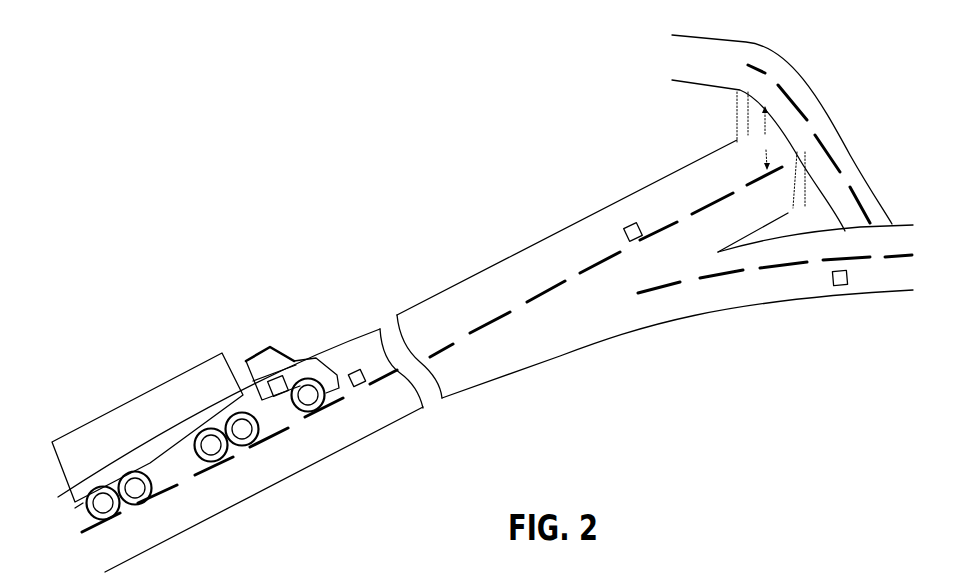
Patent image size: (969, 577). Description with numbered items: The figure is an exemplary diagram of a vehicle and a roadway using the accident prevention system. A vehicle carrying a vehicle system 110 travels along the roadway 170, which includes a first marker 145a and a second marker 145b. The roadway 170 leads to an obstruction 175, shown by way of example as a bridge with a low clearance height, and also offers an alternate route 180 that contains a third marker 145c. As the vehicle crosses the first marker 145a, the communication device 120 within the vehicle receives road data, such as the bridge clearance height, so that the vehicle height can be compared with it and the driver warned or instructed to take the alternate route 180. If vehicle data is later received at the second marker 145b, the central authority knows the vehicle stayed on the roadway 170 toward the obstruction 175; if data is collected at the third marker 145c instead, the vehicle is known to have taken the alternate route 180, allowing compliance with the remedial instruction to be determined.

The vehicle system 110 is at (273, 379).
The communication device 120 is at (303, 378).
The first marker 145a is at (352, 371).
The second marker 145b is at (631, 225).
The third marker 145c is at (840, 286).
The roadway 170 is at (215, 509).
The obstruction 175 is at (722, 73).
The alternate route 180 is at (805, 292).